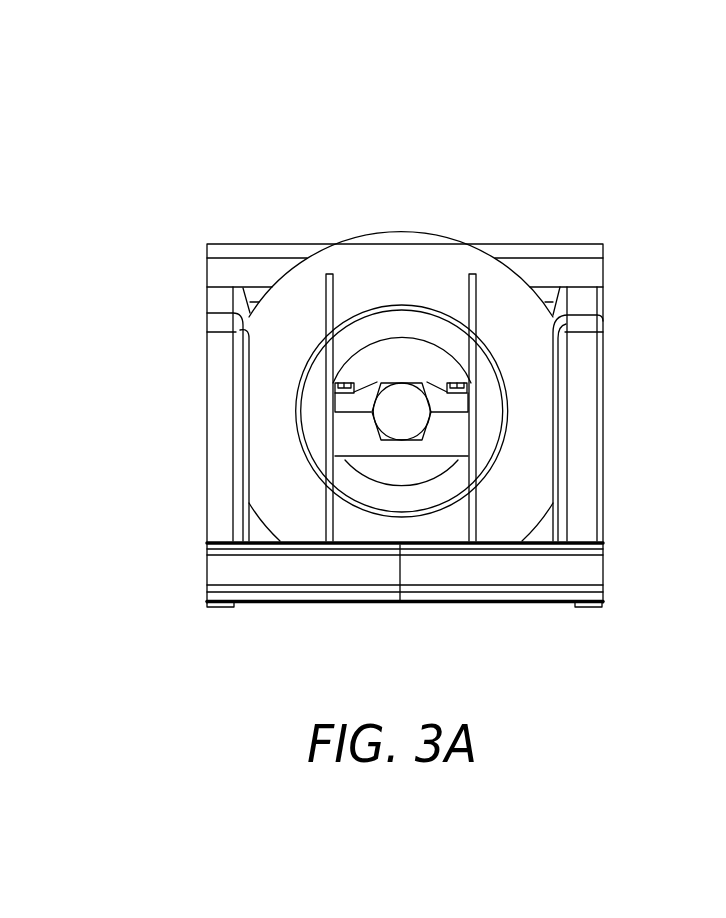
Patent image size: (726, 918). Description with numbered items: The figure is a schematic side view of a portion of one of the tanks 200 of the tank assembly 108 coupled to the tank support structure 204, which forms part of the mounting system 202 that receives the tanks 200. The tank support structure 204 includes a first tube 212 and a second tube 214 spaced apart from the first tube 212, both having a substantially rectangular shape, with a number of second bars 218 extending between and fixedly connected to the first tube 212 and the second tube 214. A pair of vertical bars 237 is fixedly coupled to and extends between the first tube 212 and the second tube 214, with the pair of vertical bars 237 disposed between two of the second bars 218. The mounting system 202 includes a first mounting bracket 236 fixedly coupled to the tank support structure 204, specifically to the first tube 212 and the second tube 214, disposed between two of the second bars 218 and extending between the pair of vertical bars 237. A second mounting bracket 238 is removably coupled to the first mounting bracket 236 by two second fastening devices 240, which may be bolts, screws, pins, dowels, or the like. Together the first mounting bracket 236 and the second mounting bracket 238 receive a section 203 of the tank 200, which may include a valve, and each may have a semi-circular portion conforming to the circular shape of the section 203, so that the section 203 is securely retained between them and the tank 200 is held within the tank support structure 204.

The tank assembly 108 is at (245, 145).
The tanks 200 is at (503, 295).
The mounting system 202 is at (546, 633).
The section 203 is at (402, 412).
The tank support structure 204 is at (254, 633).
The first tube 212 is at (555, 250).
The second tube 214 is at (455, 592).
The second bars 218 is at (218, 500).
The first mounting brackets 236 is at (337, 435).
The vertical bars 237 is at (326, 318).
The second mounting brackets 238 is at (390, 378).
The second fastening devices 240 is at (338, 386).